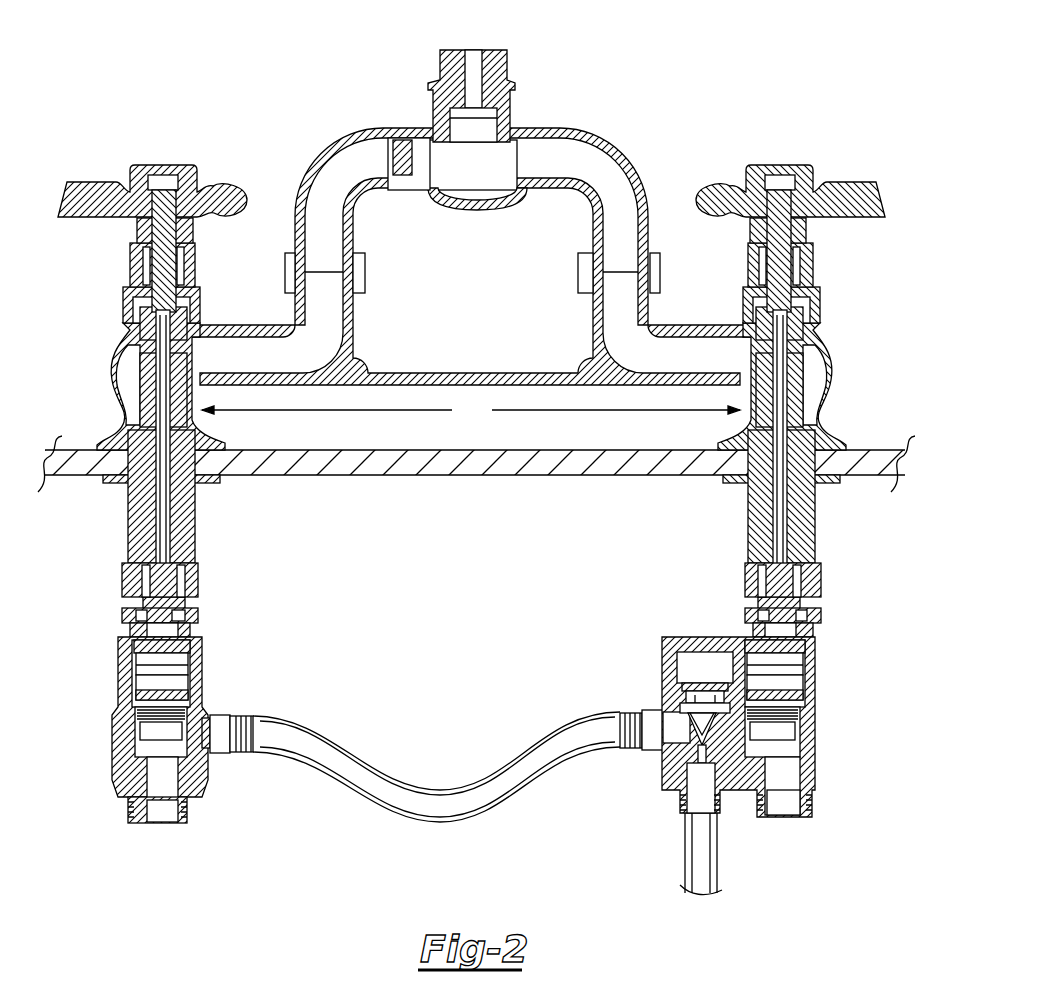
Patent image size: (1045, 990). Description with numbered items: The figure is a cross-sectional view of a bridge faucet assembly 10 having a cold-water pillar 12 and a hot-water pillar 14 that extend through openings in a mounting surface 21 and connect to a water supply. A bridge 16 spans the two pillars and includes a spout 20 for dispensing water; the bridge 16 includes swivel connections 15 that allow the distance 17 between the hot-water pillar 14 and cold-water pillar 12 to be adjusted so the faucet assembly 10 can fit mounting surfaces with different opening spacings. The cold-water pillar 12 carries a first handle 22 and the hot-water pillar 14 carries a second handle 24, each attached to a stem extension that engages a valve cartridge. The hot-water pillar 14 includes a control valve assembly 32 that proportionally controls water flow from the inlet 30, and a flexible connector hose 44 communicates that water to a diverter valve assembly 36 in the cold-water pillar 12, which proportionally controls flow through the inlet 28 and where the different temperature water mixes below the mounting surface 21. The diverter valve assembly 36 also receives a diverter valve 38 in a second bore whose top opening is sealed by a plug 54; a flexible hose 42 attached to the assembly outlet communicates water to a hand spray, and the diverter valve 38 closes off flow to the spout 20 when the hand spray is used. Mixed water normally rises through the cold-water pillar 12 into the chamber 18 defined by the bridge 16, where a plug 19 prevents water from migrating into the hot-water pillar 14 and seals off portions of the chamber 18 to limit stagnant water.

The faucet assembly 10 is at (719, 80).
The cold-water pillar 12 is at (748, 530).
The hot-water pillar 14 is at (192, 525).
The swivel connections 15 is at (583, 272).
The bridge 16 is at (572, 128).
The distance 17 is at (471, 410).
The chamber 18 is at (476, 192).
The plug 19 is at (398, 140).
The spout 20 is at (490, 50).
The mounting surface 21 is at (448, 476).
The first handle 22 is at (712, 182).
The second handle 24 is at (232, 182).
The inlet 28 is at (806, 818).
The inlet 30 is at (142, 823).
The control valve assembly 32 is at (118, 776).
The diverter valve assembly 36 is at (815, 762).
The diverter valve 38 is at (680, 767).
The flexible hose 42 is at (718, 885).
The flexible connector hose 44 is at (462, 800).
The plug 54 is at (690, 640).